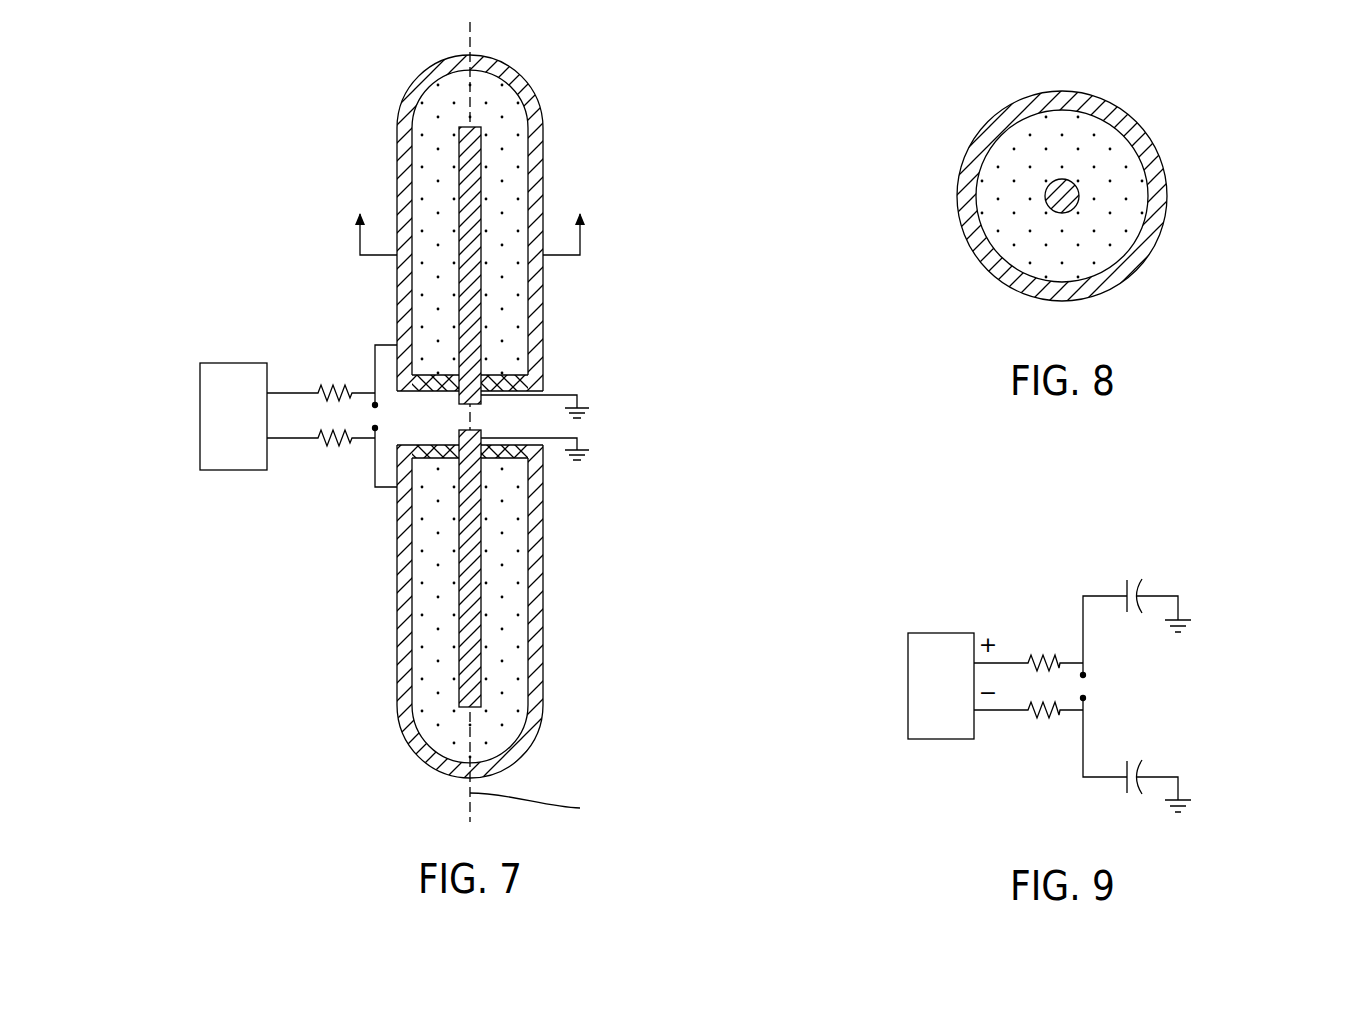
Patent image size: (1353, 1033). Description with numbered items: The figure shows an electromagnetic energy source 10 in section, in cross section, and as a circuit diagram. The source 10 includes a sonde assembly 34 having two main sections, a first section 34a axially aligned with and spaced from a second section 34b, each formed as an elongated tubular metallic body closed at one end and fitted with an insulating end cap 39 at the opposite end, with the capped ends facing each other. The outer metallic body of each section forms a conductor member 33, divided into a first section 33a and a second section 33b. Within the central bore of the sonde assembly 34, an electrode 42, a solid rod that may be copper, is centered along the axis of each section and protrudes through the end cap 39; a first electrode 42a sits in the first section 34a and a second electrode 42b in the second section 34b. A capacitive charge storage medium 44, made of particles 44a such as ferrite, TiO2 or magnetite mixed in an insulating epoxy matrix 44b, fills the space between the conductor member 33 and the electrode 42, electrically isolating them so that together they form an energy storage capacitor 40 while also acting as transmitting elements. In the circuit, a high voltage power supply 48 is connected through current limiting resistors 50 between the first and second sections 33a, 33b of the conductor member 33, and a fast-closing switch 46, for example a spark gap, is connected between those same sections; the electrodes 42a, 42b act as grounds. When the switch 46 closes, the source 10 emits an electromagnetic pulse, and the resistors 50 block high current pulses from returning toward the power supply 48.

In FIG. 7, the electromagnetic energy source 10 is at (291, 183).
In FIG. 7, the conductor member 33 is at (543, 312).
In FIG. 8, the conductor member 33 is at (1155, 208).
In FIG. 7, the first section of conductor member 33a is at (543, 642).
In FIG. 9, the first section of conductor member 33a is at (1083, 745).
In FIG. 7, the second section of conductor member 33b is at (400, 113).
In FIG. 9, the second section of conductor member 33b is at (1083, 612).
In FIG. 7, the sonde assembly 34 is at (268, 547).
In FIG. 7, the first section 34a is at (570, 526).
In FIG. 7, the second section 34b is at (567, 96).
In FIG. 7, the end cap 39 is at (543, 382).
In FIG. 7, the energy storage capacitor 40 is at (363, 603).
In FIG. 8, the electrode 42 is at (1067, 203).
In FIG. 7, the first electrode 42a is at (483, 600).
In FIG. 9, the first electrode 42a is at (1185, 785).
In FIG. 7, the second electrode 42b is at (485, 145).
In FIG. 9, the second electrode 42b is at (1185, 605).
In FIG. 7, the capacitive charge storage medium 44 is at (430, 528).
In FIG. 8, the capacitive charge storage medium 44 is at (1017, 147).
In FIG. 9, the capacitive charge storage medium 44 is at (1132, 580).
In FIG. 7, the particles 44a is at (420, 665).
In FIG. 8, the particles 44a is at (1005, 180).
In FIG. 7, the epoxy matrix 44b is at (430, 745).
In FIG. 8, the epoxy matrix 44b is at (997, 222).
In FIG. 7, the fast-closing switch 46 is at (383, 398).
In FIG. 9, the fast-closing switch 46 is at (1088, 682).
In FIG. 7, the high voltage power supply 48 is at (200, 382).
In FIG. 9, the high voltage power supply 48 is at (937, 633).
In FIG. 7, the current limiting resistors 50 is at (330, 455).
In FIG. 9, the current limiting resistors 50 is at (1030, 660).